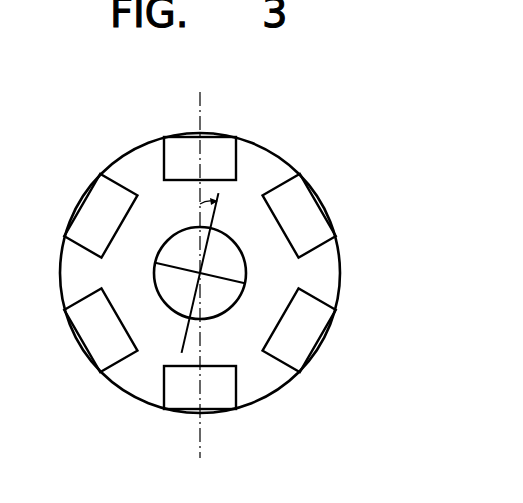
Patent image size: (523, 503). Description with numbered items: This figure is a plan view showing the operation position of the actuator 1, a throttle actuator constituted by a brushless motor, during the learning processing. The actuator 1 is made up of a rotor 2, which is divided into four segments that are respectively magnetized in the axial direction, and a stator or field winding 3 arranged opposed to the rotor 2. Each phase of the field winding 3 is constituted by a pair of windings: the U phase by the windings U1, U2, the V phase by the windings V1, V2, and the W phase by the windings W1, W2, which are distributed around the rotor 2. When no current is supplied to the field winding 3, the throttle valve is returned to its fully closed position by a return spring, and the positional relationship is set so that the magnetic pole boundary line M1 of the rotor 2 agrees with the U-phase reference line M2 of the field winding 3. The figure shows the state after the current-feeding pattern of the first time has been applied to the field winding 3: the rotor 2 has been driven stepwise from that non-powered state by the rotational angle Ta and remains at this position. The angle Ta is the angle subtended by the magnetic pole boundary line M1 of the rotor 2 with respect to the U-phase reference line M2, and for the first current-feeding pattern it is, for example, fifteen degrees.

The actuator 1 is at (228, 272).
The rotor 2 is at (178, 236).
The field winding 3 is at (221, 279).
The U-phase winding U1 is at (197, 143).
The U-phase winding U2 is at (197, 409).
The V-phase winding V1 is at (312, 216).
The V-phase winding V2 is at (88, 330).
The W-phase winding W1 is at (317, 330).
The W-phase winding W2 is at (85, 216).
The magnetic pole boundary line M1 is at (218, 214).
The U-phase reference line M2 is at (203, 94).
The stepwise rotational angle Ta is at (203, 197).